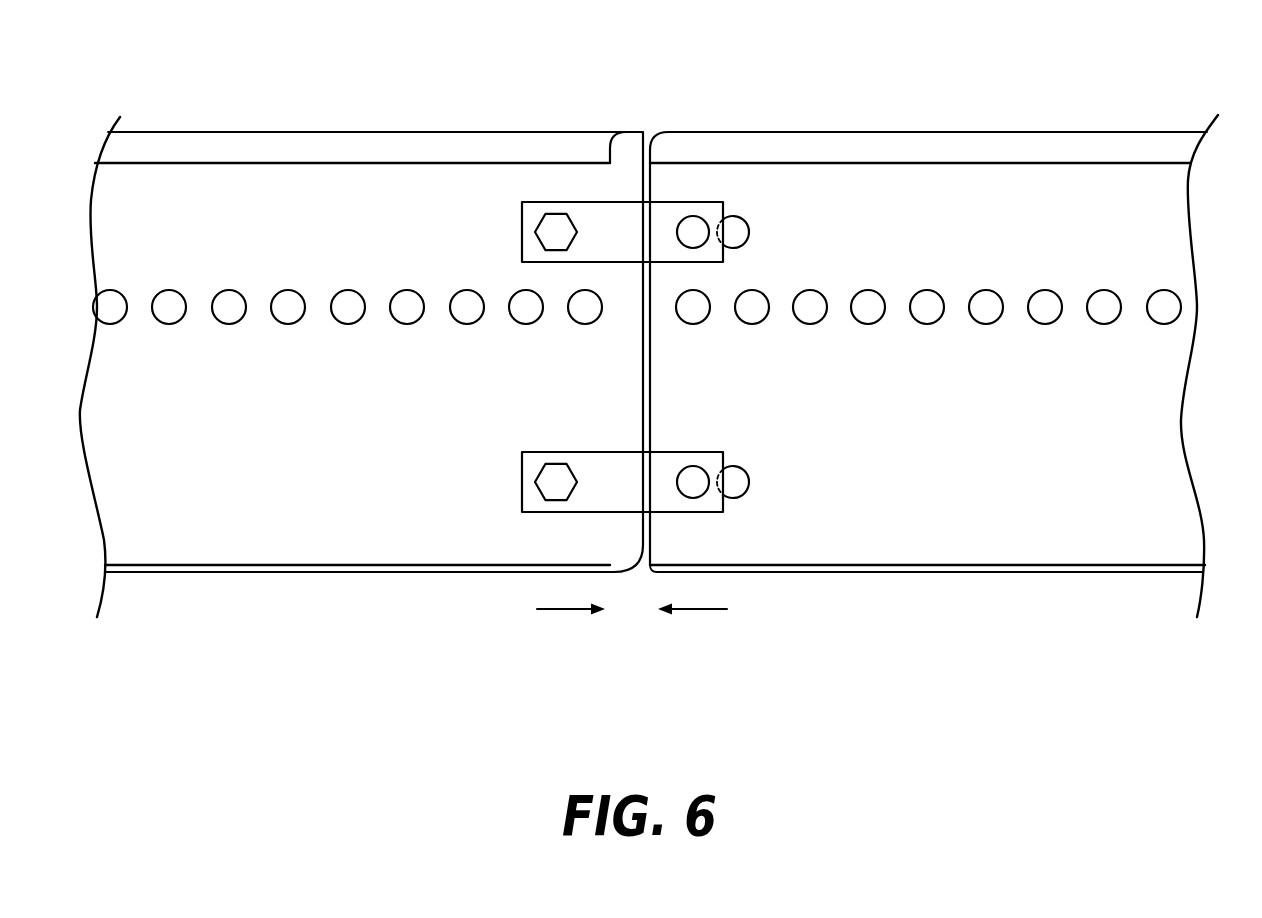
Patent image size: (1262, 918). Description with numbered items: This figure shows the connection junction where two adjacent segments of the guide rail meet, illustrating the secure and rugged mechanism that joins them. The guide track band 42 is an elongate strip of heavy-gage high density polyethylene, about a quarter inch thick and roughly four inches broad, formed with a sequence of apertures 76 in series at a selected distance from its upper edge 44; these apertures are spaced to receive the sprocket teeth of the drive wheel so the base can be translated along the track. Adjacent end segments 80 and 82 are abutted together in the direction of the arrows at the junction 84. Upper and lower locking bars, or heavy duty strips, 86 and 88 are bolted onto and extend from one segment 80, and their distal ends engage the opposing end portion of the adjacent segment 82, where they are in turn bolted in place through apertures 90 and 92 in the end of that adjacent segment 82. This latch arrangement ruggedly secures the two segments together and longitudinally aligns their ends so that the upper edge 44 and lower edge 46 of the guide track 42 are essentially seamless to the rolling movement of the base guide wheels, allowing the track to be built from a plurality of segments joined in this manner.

The guide track band 42 is at (1158, 262).
The upper edge 44 is at (149, 153).
The lower edge 46 is at (230, 564).
The apertures 76 is at (165, 291).
The end segment 80 is at (234, 466).
The adjacent segment 82 is at (870, 441).
The joint 84 is at (657, 99).
The upper locking bar 86 is at (558, 206).
The lower locking bar 88 is at (522, 503).
The aperture 90 is at (742, 218).
The aperture 92 is at (748, 486).